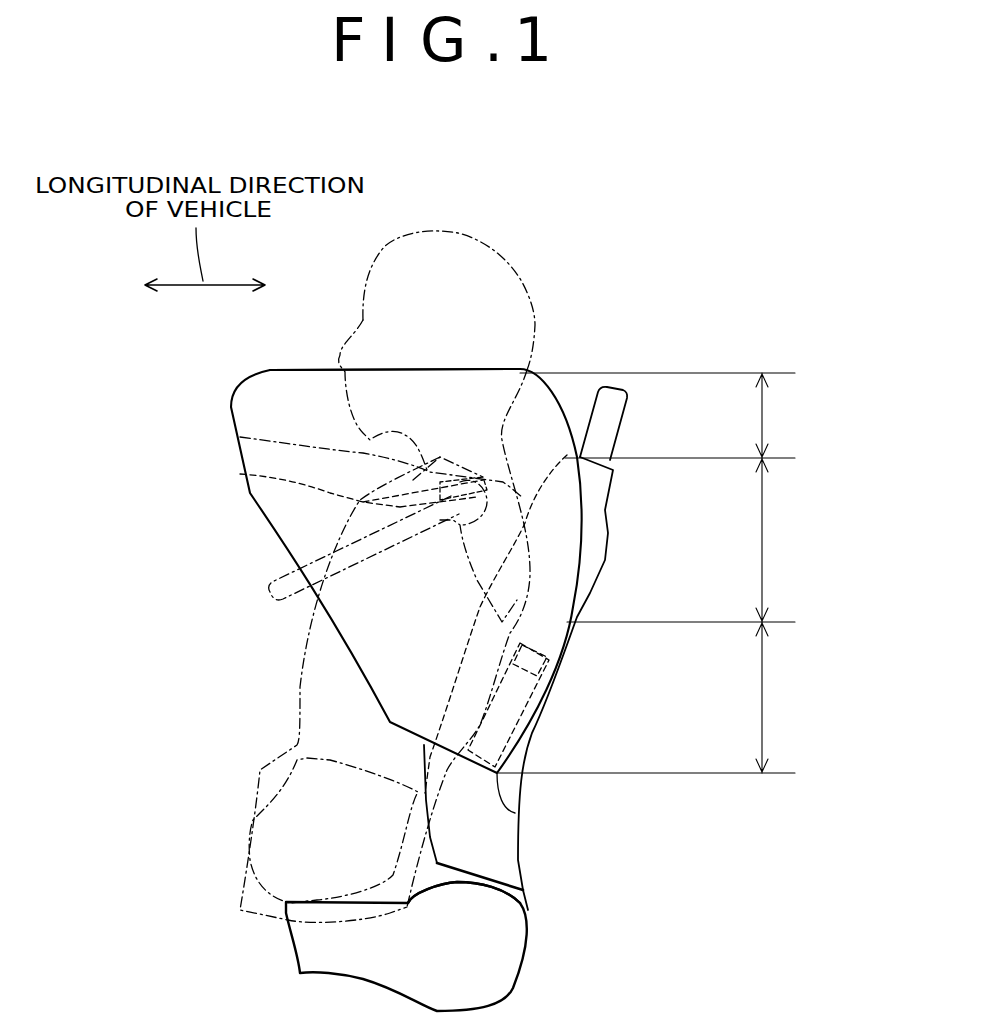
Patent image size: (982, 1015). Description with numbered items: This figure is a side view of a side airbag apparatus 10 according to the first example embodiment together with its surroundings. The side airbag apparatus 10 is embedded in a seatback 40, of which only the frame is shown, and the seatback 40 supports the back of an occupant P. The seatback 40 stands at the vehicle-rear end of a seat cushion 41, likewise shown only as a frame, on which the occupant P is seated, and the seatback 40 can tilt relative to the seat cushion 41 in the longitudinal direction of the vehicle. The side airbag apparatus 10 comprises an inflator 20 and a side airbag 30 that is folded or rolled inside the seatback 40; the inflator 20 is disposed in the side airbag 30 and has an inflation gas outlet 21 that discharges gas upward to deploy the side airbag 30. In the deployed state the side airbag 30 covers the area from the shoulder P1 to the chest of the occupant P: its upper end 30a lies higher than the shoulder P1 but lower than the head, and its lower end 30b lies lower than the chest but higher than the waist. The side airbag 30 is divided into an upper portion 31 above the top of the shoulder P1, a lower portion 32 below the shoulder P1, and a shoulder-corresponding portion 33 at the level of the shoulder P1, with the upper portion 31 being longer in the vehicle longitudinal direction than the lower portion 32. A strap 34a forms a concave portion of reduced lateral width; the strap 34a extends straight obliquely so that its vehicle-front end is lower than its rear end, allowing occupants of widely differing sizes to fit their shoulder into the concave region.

The side airbag apparatus 10 is at (275, 531).
The inflator 20 is at (500, 730).
The inflation gas outlet 21 is at (541, 652).
The side airbag 30 is at (251, 493).
The upper end of the side airbag 30a is at (386, 370).
The lower end of the side airbag 30b is at (515, 813).
The upper portion 31 is at (768, 415).
The lower portion 32 is at (768, 695).
The shoulder-corresponding portion 33 is at (768, 540).
The strap 34a is at (240, 474).
The seatback 40 is at (525, 878).
The seat cushion 41 is at (495, 965).
The occupant P is at (507, 289).
The shoulder P1 is at (240, 437).